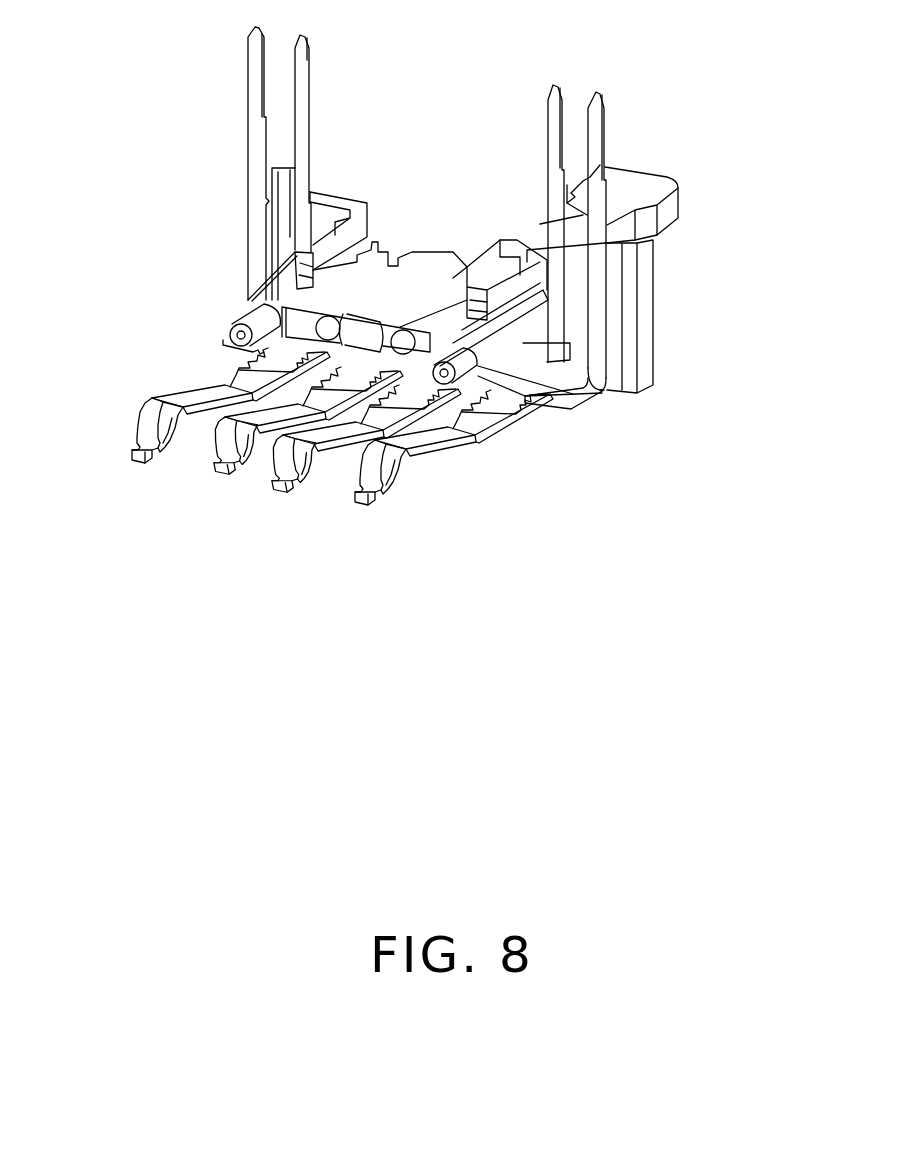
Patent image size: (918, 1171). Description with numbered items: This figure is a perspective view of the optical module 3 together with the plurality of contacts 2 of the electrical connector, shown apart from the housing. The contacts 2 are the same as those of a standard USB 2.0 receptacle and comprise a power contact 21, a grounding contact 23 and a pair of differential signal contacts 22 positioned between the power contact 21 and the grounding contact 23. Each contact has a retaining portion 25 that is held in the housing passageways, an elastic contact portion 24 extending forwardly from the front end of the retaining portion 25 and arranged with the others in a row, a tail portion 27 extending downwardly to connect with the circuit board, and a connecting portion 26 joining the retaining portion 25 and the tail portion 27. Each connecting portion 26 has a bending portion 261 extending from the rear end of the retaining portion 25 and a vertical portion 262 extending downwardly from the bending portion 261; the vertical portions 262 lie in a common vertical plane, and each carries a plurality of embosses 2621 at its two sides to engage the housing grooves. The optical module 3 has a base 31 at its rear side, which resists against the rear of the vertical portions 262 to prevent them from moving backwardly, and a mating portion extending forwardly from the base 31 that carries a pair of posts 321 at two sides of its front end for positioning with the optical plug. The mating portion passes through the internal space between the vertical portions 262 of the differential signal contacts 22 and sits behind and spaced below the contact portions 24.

The contacts 2 is at (347, 620).
The power contact 21 is at (140, 465).
The differential signal contacts 22 is at (278, 483).
The grounding contact 23 is at (392, 476).
The elastic contact portion 24 is at (385, 450).
The retaining portion 25 is at (487, 403).
The connecting portion 26 is at (300, 230).
The bending portion 261 is at (586, 404).
The vertical portion 262 is at (553, 303).
The embosses 2621 is at (247, 207).
The tail portion 27 is at (598, 158).
The optical module 3 is at (433, 270).
The base 31 is at (622, 363).
The posts 321 is at (257, 320).